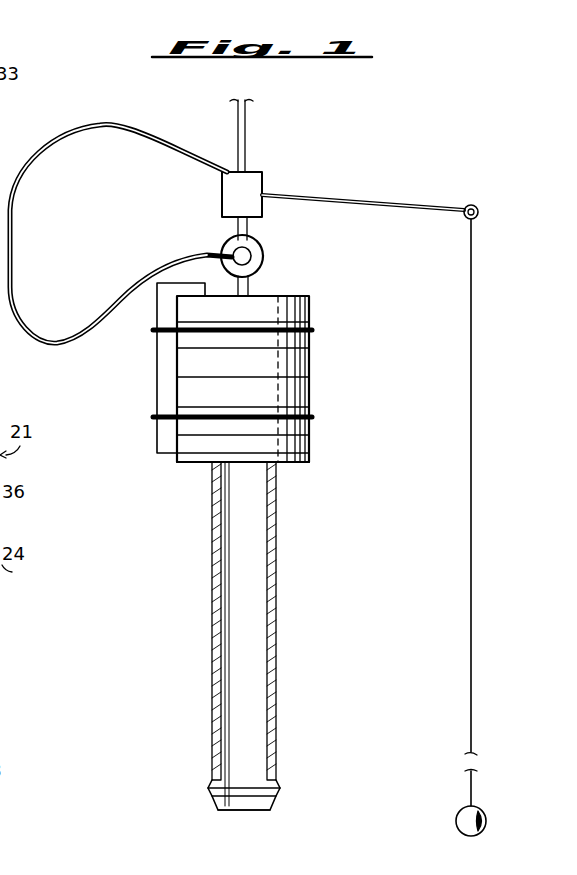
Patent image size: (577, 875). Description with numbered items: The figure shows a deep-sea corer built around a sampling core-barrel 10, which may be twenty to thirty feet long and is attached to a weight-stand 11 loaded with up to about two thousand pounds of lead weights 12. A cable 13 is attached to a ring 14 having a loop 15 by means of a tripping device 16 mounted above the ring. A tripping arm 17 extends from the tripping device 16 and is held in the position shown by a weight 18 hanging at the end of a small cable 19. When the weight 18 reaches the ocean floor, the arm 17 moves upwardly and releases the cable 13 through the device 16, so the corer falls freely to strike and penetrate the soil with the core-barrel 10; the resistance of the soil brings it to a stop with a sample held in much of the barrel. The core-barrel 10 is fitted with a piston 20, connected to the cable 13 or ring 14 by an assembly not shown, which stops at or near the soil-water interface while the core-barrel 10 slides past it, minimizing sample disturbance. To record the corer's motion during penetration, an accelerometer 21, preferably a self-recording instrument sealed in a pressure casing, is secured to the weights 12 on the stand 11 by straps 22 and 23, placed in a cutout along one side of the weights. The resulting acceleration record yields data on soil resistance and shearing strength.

The core-barrel 10 is at (278, 574).
The weight-stand 11 is at (186, 464).
The lead weights 12 is at (306, 368).
The cable 13 is at (247, 137).
The ring 14 is at (266, 262).
The loop 15 is at (78, 348).
The tripping device 16 is at (252, 181).
The tripping arm 17 is at (358, 182).
The weight 18 is at (460, 812).
The small cable 19 is at (470, 694).
The piston 20 is at (240, 796).
The accelerometer 21 is at (165, 395).
The strap 22 is at (160, 331).
The strap 23 is at (158, 420).